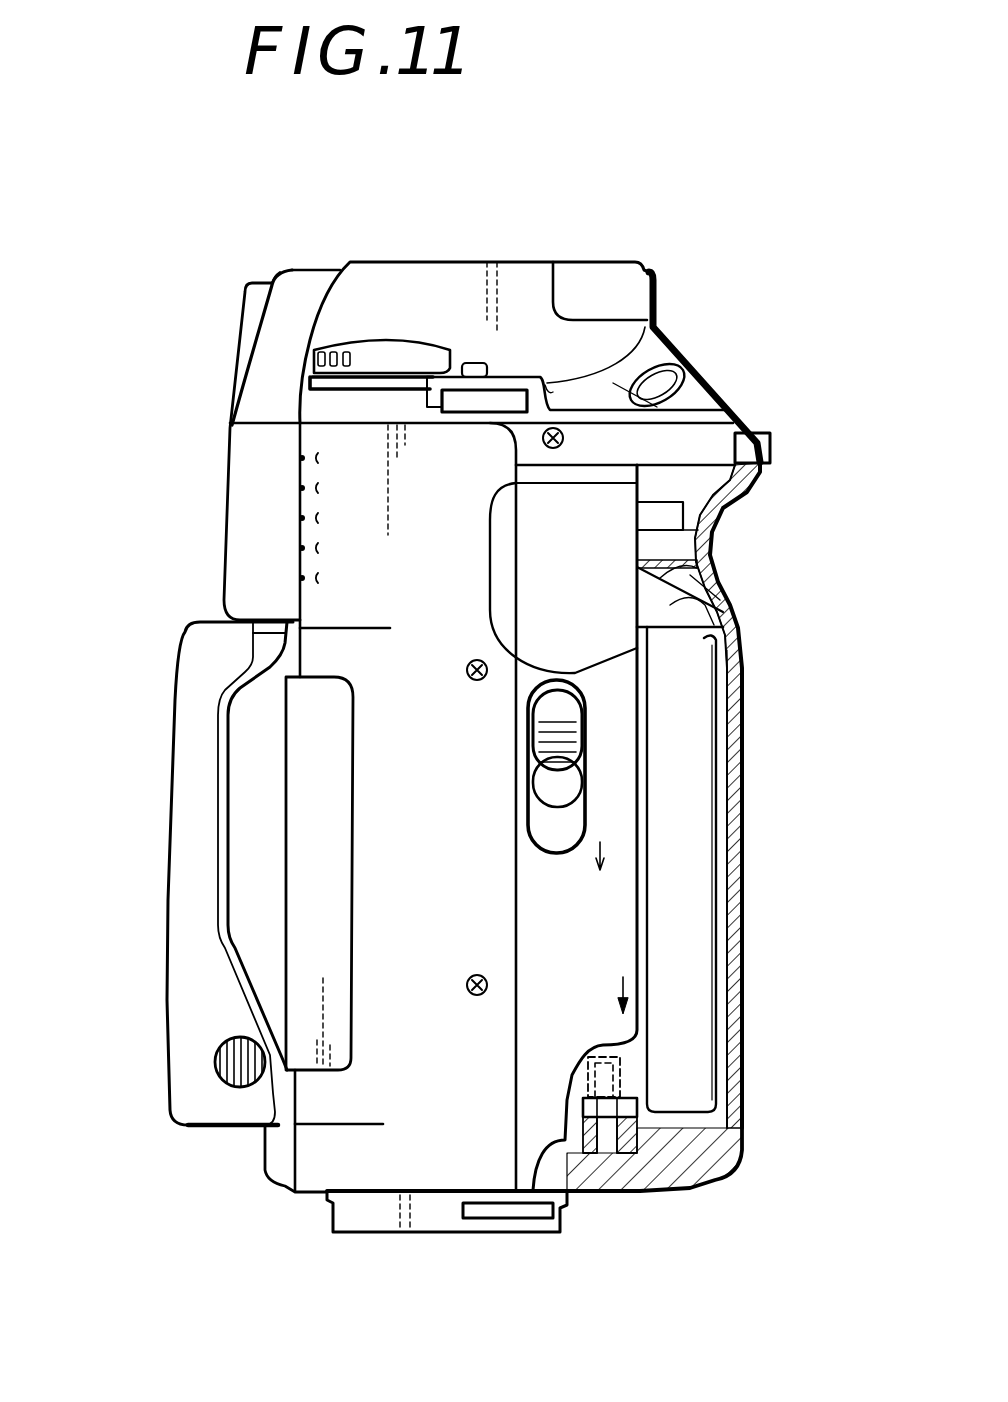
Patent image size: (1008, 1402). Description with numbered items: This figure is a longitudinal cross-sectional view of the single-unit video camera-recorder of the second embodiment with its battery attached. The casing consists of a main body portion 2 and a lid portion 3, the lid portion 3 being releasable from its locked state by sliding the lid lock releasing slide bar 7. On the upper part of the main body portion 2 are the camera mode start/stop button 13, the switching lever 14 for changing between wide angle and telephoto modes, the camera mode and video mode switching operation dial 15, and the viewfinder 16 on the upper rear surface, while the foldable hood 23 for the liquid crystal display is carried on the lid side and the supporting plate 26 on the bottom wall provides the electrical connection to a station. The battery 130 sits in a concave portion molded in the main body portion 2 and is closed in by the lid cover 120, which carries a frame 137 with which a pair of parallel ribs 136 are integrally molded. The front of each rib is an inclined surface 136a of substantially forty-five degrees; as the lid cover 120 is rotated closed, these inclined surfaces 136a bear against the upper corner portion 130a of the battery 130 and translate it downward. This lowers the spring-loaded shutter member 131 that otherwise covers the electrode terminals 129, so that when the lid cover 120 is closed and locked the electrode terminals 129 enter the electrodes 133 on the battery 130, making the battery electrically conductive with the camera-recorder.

The main body portion 2 is at (580, 530).
The lid portion 3 is at (340, 515).
The lid lock releasing slide bar 7 is at (567, 747).
The camera mode start/stop button 13 is at (657, 383).
The switching lever 14 is at (770, 447).
The camera mode and video mode switching operation dial 15 is at (393, 363).
The viewfinder 16 is at (252, 318).
The hood 23 is at (188, 886).
The supporting plate 26 is at (377, 1208).
The lid cover 120 is at (745, 820).
The electrode terminals 129 is at (612, 1137).
The battery 130 is at (690, 915).
The upper corner portion 130a is at (742, 688).
The shutter member 131 is at (700, 1150).
The electrodes 133 is at (620, 1075).
The ribs 136 is at (712, 576).
The inclined surface 136a is at (712, 614).
The frame 137 is at (700, 537).